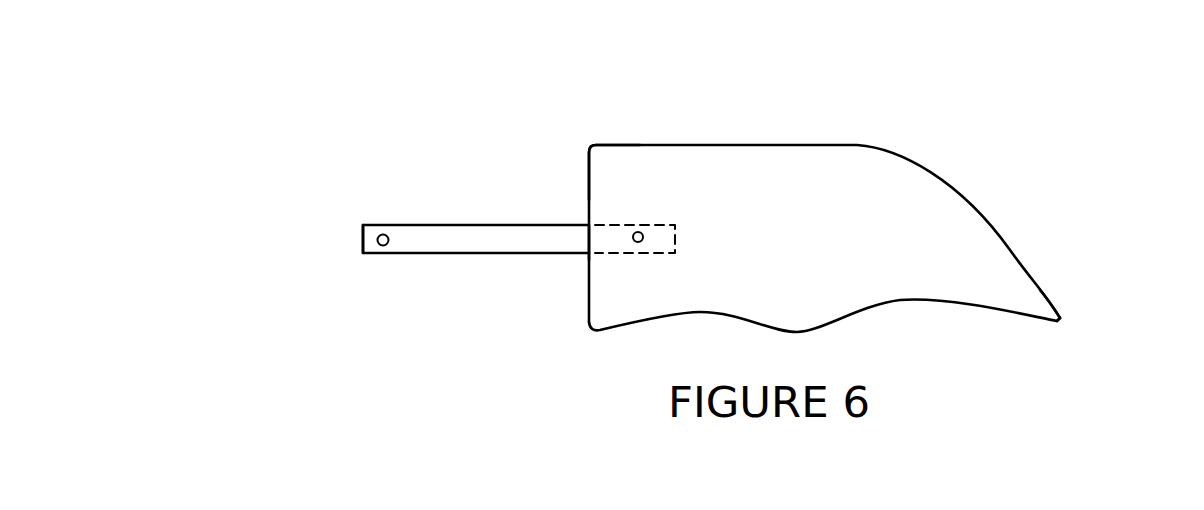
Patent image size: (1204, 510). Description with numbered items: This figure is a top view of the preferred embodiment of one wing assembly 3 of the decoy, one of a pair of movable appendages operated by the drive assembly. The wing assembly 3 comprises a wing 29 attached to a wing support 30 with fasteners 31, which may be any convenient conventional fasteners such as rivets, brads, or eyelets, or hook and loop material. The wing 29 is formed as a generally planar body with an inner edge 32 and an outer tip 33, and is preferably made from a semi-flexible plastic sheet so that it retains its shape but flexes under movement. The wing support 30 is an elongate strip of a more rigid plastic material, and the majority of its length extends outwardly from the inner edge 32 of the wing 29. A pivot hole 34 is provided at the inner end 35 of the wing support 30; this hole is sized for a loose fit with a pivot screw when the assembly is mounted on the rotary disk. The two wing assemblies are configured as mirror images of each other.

The wing assembly 3 is at (570, 269).
The wing 29 is at (813, 178).
The wing support 30 is at (457, 240).
The fasteners 31 is at (642, 233).
The inner edge 32 is at (588, 173).
The outer tip 33 is at (1060, 319).
The pivot hole 34 is at (386, 235).
The inner end 35 is at (363, 242).